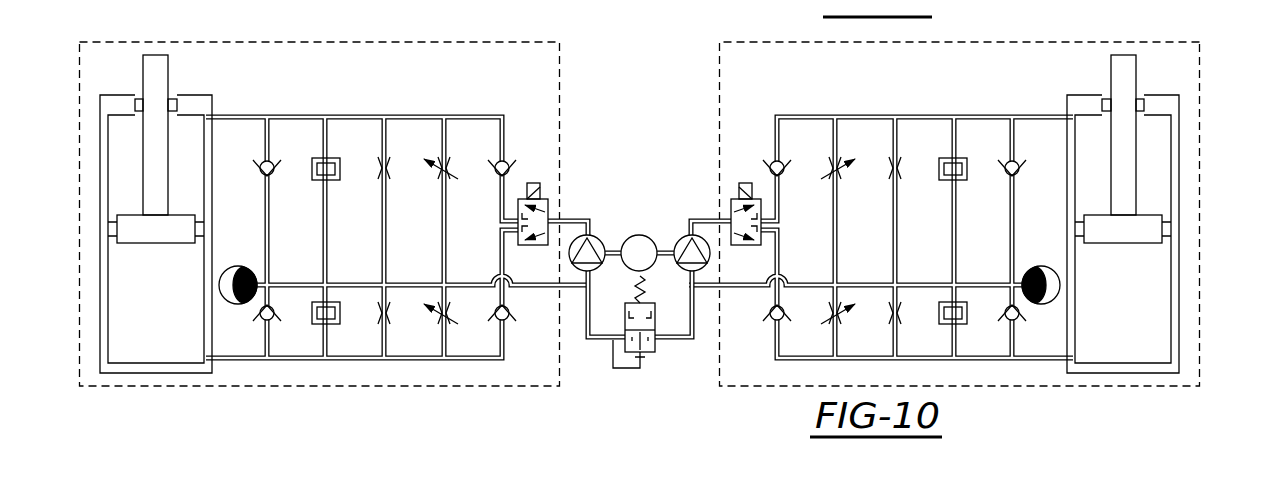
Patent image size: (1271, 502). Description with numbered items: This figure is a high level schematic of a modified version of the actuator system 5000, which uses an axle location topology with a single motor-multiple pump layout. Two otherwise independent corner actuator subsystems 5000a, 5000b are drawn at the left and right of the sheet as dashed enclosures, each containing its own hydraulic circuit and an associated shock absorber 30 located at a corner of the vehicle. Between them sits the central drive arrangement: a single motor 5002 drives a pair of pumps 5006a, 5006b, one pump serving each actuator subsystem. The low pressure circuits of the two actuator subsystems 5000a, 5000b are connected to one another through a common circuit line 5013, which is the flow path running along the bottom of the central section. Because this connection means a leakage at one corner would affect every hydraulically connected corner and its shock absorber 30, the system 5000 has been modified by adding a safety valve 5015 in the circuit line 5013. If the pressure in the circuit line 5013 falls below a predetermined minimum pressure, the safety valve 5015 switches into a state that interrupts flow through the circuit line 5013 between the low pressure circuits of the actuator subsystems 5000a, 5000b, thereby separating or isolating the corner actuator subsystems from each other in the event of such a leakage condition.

The system 5000 is at (639, 205).
The actuator subsystem 5000a is at (192, 42).
The actuator subsystem 5000b is at (1087, 42).
The shock absorber 30 is at (98, 301).
The motor 5002 is at (640, 235).
The pump 5006a is at (603, 235).
The pump 5006b is at (676, 235).
The circuit line 5013 is at (598, 341).
The safety valve 5015 is at (648, 346).